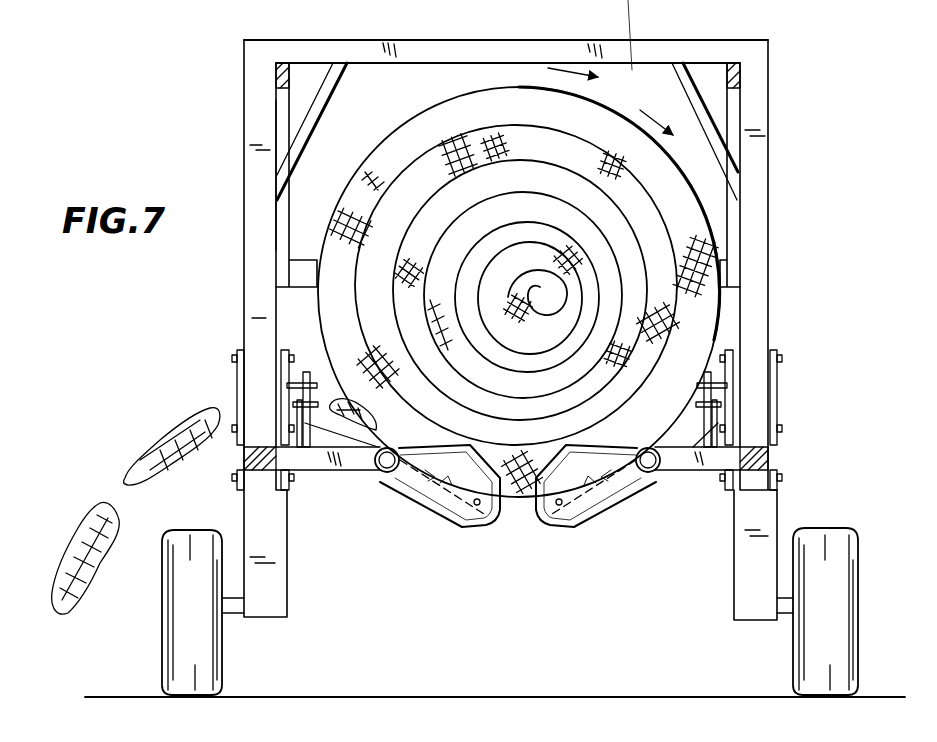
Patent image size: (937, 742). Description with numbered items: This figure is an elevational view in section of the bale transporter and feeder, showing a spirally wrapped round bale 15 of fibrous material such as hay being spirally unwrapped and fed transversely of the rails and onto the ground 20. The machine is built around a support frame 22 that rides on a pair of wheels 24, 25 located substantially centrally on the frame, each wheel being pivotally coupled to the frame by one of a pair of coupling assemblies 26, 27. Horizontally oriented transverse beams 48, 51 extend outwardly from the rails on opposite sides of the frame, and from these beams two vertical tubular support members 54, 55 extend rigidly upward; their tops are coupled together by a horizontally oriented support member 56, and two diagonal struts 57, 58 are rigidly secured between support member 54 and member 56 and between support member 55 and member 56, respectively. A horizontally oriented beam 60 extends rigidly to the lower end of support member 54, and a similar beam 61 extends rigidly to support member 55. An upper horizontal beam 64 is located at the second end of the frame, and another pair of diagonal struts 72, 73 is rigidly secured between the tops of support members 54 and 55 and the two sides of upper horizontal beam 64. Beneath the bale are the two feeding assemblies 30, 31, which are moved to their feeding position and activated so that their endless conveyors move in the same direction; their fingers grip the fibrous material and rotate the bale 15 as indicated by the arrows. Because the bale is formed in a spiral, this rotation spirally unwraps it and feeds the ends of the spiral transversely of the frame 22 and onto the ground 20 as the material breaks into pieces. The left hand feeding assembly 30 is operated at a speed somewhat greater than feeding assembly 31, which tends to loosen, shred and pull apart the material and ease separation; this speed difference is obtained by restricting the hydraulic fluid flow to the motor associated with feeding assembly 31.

The bale 15 is at (440, 106).
The ground 20 is at (523, 692).
The support frame 22 is at (509, 310).
The wheel 24 is at (158, 544).
The wheel 25 is at (859, 547).
The coupling assembly 26 is at (226, 392).
The coupling assembly 27 is at (788, 396).
The feeding assembly 30 is at (458, 532).
The feeding assembly 31 is at (566, 537).
The transverse beam 48 is at (365, 470).
The transverse beam 51 is at (704, 470).
The support member 54 is at (244, 118).
The support member 55 is at (768, 150).
The horizontally oriented support member 56 is at (583, 42).
The diagonal strut 57 is at (312, 128).
The diagonal strut 58 is at (683, 70).
The horizontally oriented beam 60 is at (244, 458).
The beam 61 is at (770, 458).
The upper horizontal beam 64 is at (289, 255).
The diagonal strut 72 is at (290, 200).
The diagonal strut 73 is at (736, 192).